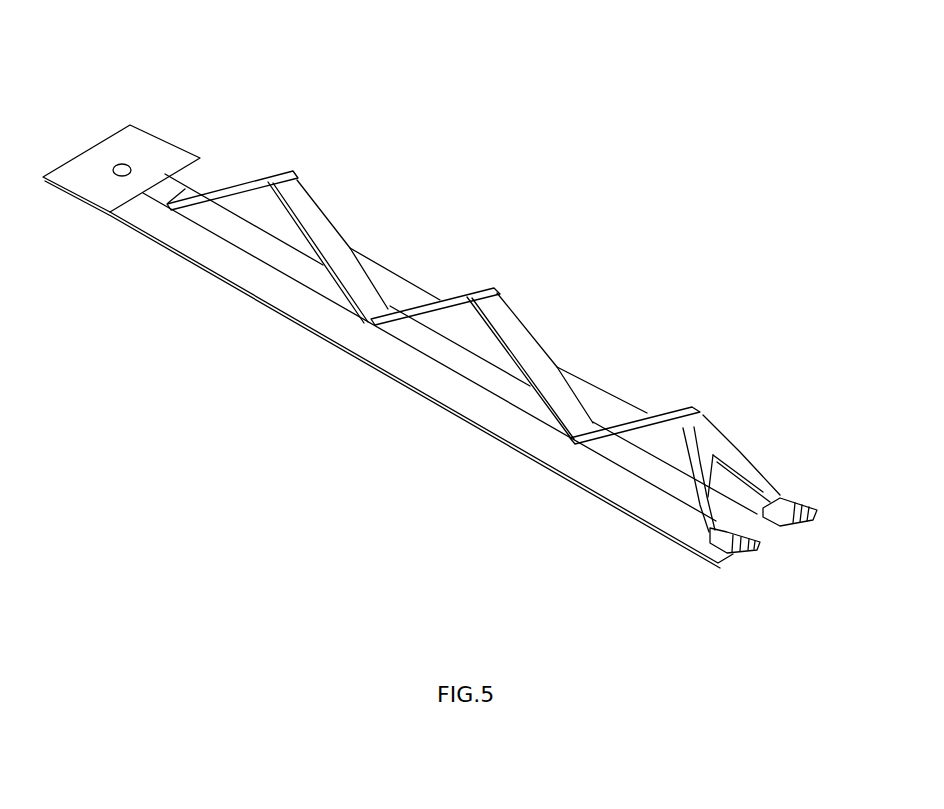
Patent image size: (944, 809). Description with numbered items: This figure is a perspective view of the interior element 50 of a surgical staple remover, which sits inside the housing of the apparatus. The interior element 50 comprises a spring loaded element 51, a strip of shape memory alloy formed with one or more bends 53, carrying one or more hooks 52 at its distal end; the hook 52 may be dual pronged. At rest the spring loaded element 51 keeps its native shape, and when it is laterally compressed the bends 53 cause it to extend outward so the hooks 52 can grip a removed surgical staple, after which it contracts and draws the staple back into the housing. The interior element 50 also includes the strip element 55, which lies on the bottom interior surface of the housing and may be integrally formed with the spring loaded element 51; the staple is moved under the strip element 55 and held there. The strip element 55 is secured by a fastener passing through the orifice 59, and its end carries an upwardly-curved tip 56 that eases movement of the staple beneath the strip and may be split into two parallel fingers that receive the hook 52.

The interior element 50 is at (517, 219).
The spring loaded element 51 is at (214, 192).
The hook 52 is at (723, 537).
The bend 53 is at (293, 173).
The strip element 55 is at (465, 403).
The upwardly-curved tip 56 is at (793, 528).
The orifice 59 is at (125, 165).